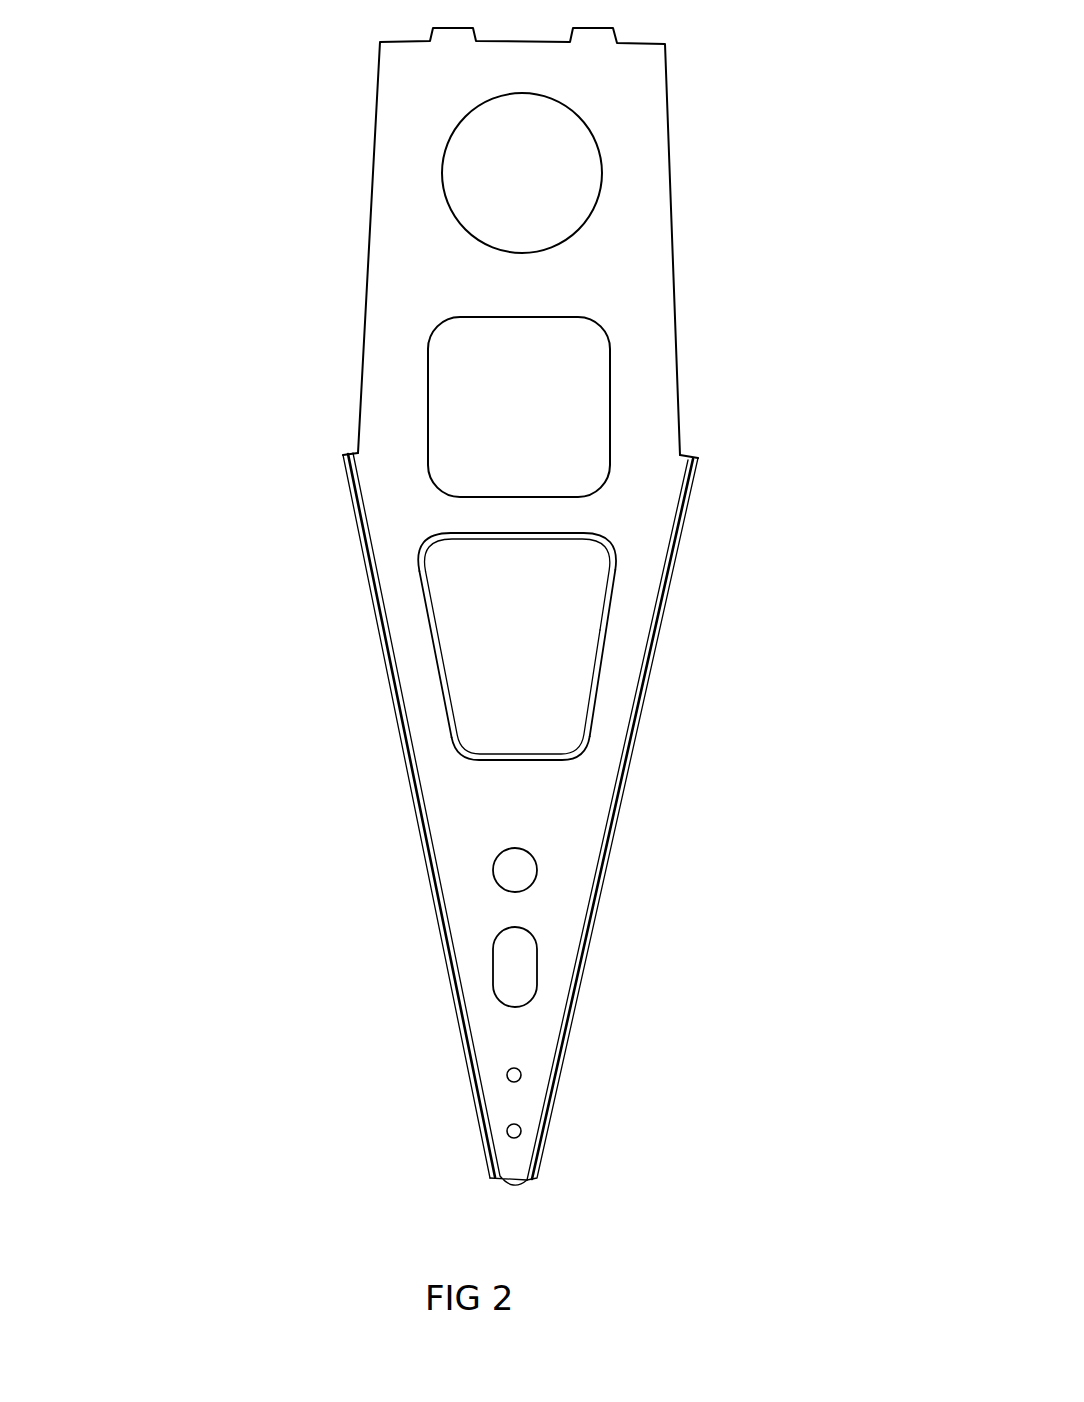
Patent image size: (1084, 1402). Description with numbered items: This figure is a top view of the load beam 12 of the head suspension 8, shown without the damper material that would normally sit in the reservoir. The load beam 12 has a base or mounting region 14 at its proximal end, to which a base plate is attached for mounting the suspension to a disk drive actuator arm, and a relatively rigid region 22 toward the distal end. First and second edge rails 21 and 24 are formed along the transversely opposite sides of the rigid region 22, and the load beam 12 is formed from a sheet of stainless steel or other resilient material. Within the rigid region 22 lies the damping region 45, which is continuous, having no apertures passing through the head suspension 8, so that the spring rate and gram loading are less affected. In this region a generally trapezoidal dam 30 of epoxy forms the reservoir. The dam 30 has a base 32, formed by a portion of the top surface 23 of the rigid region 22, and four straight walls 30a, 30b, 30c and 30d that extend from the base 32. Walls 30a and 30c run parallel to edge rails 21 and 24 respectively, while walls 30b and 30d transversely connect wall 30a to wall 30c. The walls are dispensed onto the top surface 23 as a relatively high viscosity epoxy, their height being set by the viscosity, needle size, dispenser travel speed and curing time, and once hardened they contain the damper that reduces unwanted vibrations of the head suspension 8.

The head suspension 8 is at (261, 356).
The mounting region 14 is at (668, 117).
The load beam 12 is at (718, 482).
The first edge rail 21 is at (353, 505).
The rigid region 22 is at (623, 760).
The top surface 23 is at (408, 552).
The second edge rail 24 is at (652, 673).
The dam 30 is at (545, 662).
The straight wall 30a is at (424, 630).
The straight wall 30b is at (548, 532).
The straight wall 30c is at (615, 602).
The straight wall 30d is at (510, 762).
The base 32 is at (515, 707).
The damping region 45 is at (583, 593).